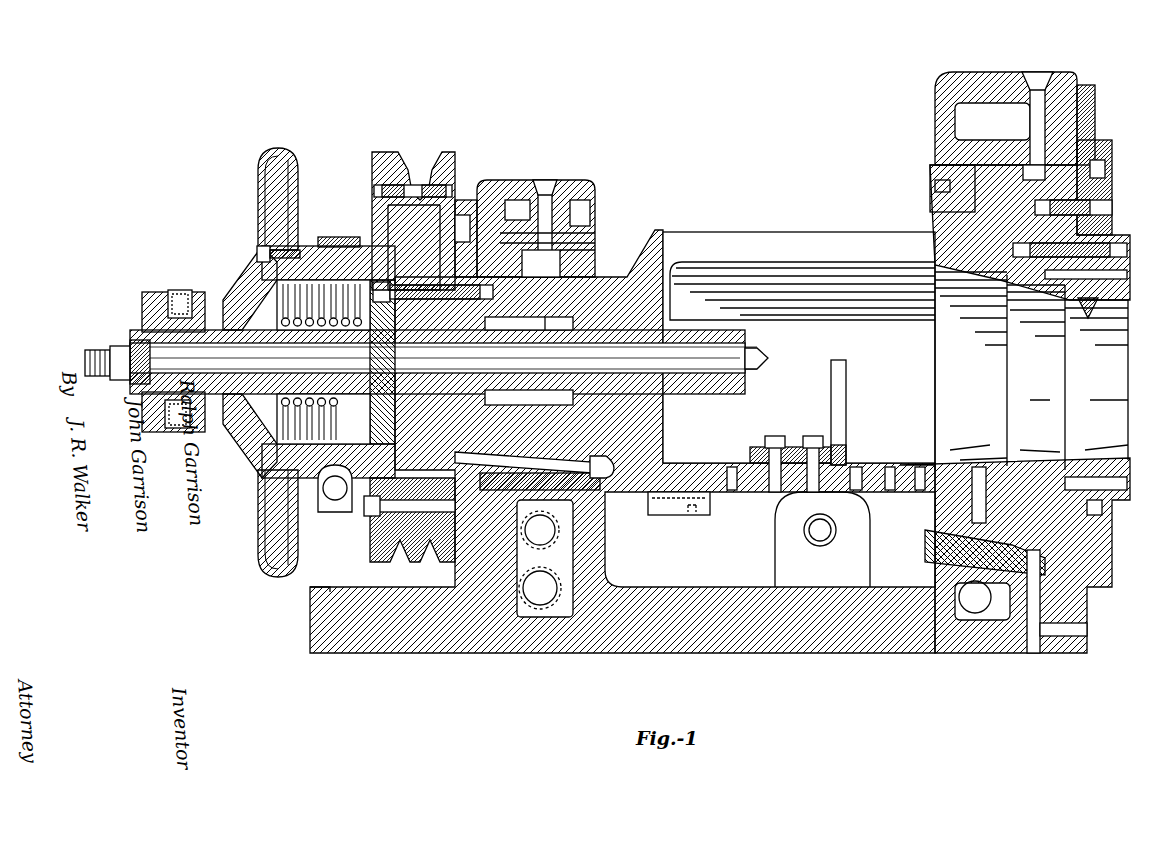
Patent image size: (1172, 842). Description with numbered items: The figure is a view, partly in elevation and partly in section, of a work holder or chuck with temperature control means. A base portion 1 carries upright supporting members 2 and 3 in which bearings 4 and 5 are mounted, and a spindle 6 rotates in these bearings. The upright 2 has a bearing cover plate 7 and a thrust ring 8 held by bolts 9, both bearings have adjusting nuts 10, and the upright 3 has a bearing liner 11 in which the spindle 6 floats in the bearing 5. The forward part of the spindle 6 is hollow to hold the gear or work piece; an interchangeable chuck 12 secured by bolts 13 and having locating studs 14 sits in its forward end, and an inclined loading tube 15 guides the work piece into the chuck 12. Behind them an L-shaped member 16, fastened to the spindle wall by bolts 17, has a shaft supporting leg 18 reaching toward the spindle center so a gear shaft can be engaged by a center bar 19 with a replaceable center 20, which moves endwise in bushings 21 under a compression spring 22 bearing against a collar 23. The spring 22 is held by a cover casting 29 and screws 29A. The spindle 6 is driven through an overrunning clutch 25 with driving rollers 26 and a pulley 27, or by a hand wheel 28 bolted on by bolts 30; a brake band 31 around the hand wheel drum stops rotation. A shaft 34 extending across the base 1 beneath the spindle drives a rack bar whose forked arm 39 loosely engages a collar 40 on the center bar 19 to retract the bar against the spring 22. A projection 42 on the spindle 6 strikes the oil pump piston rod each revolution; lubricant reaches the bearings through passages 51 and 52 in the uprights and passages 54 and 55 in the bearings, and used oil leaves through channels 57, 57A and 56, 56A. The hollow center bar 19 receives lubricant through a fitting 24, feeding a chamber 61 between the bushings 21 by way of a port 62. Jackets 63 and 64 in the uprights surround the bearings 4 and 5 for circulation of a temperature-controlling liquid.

The base portion 1 is at (692, 650).
The upright supporting member 2 is at (1003, 72).
The upright supporting member 3 is at (587, 182).
The bearing 4 is at (1093, 118).
The bearing 5 is at (593, 259).
The spindle 6 is at (760, 245).
The bearing cover plate 7 is at (1106, 148).
The thrust ring 8 is at (1107, 182).
The bolts 9 is at (1112, 208).
The adjusting nuts 10 is at (462, 215).
The bearing liner 11 is at (596, 233).
The interchangeable chuck 12 is at (1128, 278).
The bolts 13 is at (1128, 251).
The locating studs 14 is at (1100, 312).
The loading tube 15 is at (993, 282).
The L-shaped member 16 is at (772, 458).
The bolts 17 is at (812, 432).
The shaft supporting leg 18 is at (848, 412).
The center bar 19 is at (702, 342).
The replaceable center 20 is at (762, 356).
The bushings 21 is at (684, 314).
The compression spring 22 is at (306, 314).
The collar 23 is at (364, 412).
The fitting 24 is at (123, 336).
The overrunning clutch 25 is at (405, 168).
The driving rollers 26 is at (372, 520).
The pulley 27 is at (445, 168).
The hand wheel 28 is at (274, 572).
The cover casting 29 is at (253, 276).
The screws 29A is at (258, 250).
The bolts 30 is at (390, 262).
The brake band 31 is at (331, 237).
The shaft 34 is at (806, 532).
The forked arm 39 is at (166, 292).
The collar 40 is at (200, 424).
The projection 42 is at (662, 517).
The passage 51 is at (1042, 76).
The passage 52 is at (548, 180).
The passage 54 is at (1033, 165).
The passage 55 is at (541, 263).
The channel 56 is at (935, 565).
The channel 56A is at (1076, 636).
The channel 57 is at (529, 396).
The channel 57A is at (596, 480).
The chamber 61 is at (529, 322).
The port 62 is at (541, 322).
The jacket 63 is at (972, 103).
The jacket 64 is at (590, 212).